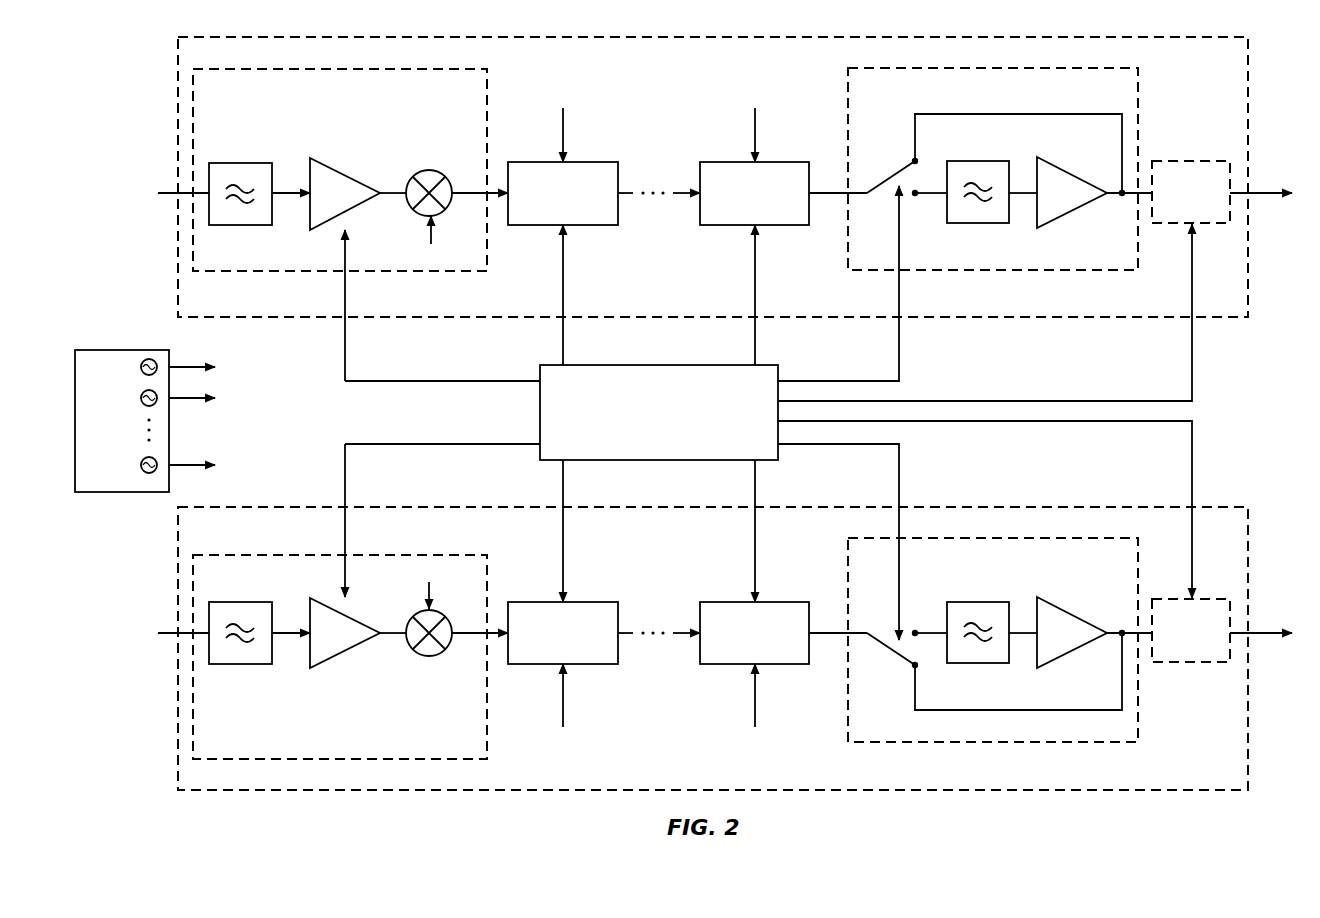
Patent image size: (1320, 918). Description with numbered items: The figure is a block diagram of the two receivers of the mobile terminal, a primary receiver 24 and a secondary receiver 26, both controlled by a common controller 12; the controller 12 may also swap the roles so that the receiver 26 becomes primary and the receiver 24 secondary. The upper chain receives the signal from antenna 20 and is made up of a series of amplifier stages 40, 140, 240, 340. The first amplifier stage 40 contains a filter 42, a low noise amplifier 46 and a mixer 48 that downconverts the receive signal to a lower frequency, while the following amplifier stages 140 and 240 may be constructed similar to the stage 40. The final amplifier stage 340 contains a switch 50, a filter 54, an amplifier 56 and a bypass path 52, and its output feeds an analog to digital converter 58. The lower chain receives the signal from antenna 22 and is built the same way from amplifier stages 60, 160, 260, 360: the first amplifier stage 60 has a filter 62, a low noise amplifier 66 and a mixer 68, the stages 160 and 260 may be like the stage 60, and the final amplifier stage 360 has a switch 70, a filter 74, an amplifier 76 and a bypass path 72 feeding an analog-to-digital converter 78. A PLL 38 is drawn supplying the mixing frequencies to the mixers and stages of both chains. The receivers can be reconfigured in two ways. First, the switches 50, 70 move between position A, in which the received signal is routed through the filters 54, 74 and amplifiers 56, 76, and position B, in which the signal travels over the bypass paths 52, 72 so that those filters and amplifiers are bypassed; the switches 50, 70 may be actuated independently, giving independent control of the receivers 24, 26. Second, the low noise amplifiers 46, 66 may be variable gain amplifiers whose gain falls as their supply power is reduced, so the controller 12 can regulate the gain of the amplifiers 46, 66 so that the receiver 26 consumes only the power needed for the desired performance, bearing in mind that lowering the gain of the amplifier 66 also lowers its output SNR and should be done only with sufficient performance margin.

The controller 12 is at (680, 365).
The antenna (signal from antenna 20) 20 is at (142, 201).
The antenna (signal from antenna 22) 22 is at (142, 641).
The receiver 24 is at (1248, 88).
The secondary receiver 26 is at (1248, 725).
The PLL 38 is at (138, 350).
The first amplifier stage 40 is at (248, 271).
The filter 42 is at (232, 225).
The low noise amplifier 46 is at (327, 166).
The mixer 48 is at (433, 170).
The switch 50 is at (890, 179).
The bypass path 52 is at (1060, 114).
The filter 54 is at (975, 161).
The amplifier 56 is at (1070, 211).
The analog to digital converter 58 is at (1190, 161).
The first amplifier stage 60 is at (248, 555).
The filter 62 is at (232, 664).
The low noise amplifier 66 is at (320, 665).
The mixer 68 is at (436, 611).
The switch 70 is at (888, 648).
The bypass path 72 is at (1060, 710).
The filter 74 is at (975, 602).
The amplifier 76 is at (1060, 612).
The analog-to-digital converter 78 is at (1185, 662).
The amplifier stage 140 is at (587, 162).
The amplifier stage 160 is at (587, 602).
The amplifier stage 240 is at (779, 162).
The amplifier stage 260 is at (779, 602).
The final amplifier stage 340 is at (1138, 98).
The final amplifier stage 360 is at (1138, 718).